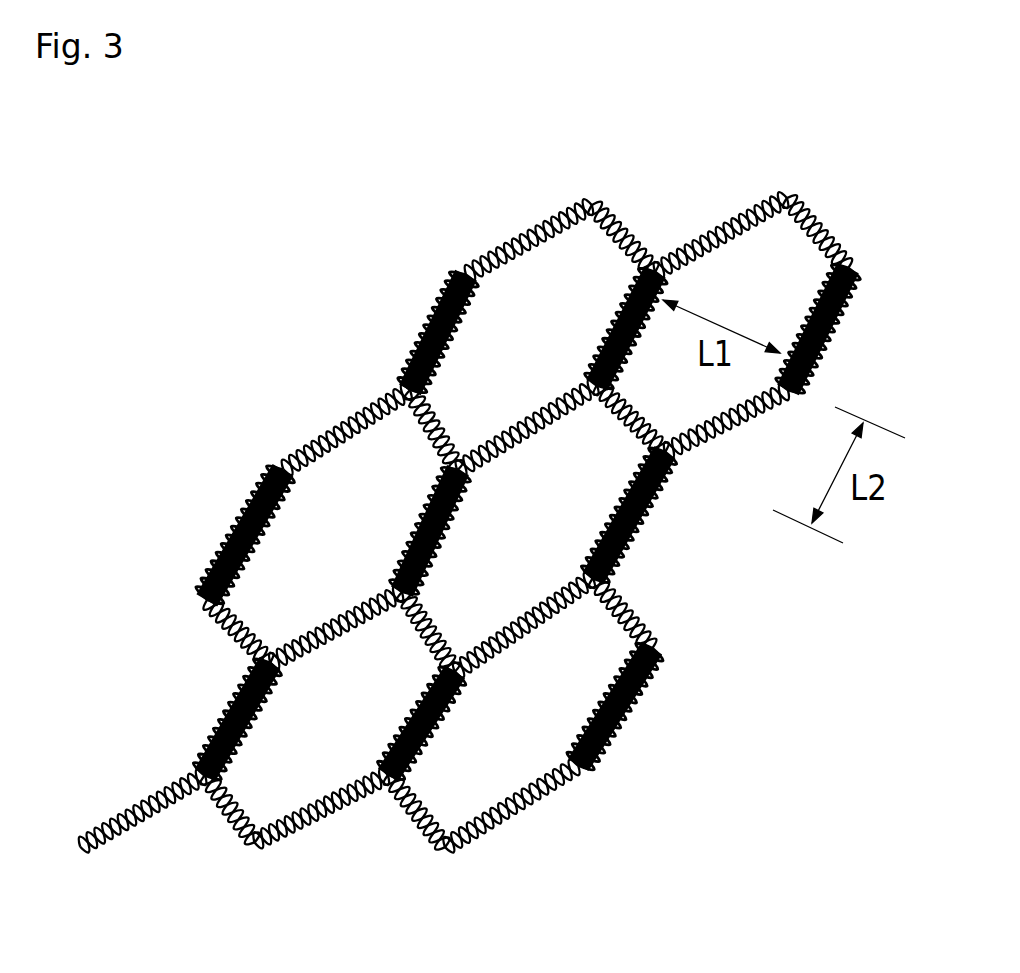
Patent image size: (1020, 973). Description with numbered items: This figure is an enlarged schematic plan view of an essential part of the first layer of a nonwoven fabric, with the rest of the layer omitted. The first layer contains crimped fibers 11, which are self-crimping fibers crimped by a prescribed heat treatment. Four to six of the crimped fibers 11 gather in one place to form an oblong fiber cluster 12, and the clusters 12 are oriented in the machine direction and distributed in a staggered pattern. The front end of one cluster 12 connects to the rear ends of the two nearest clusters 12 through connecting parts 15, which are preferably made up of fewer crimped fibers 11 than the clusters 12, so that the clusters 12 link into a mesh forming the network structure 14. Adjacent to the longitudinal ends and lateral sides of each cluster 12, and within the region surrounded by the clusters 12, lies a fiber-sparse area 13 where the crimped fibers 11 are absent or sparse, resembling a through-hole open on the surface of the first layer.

The crimped fibers 11 is at (227, 707).
The fiber cluster 12 is at (520, 773).
The fiber-sparse area 13 is at (520, 690).
The network structure 14 is at (613, 750).
The connecting parts 15 is at (737, 217).